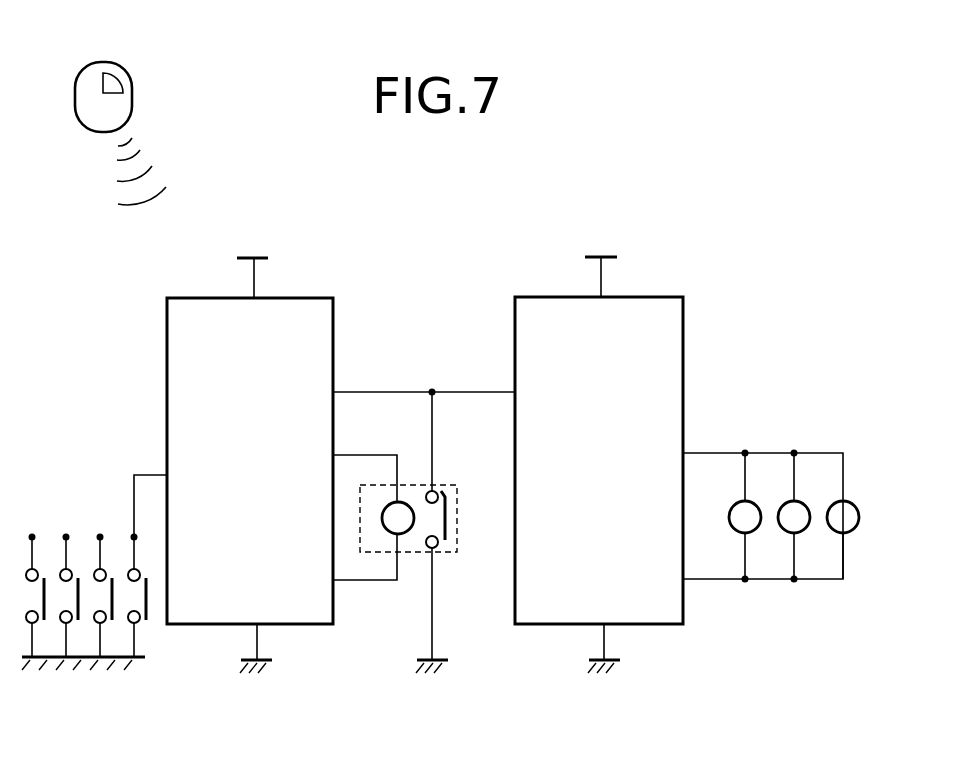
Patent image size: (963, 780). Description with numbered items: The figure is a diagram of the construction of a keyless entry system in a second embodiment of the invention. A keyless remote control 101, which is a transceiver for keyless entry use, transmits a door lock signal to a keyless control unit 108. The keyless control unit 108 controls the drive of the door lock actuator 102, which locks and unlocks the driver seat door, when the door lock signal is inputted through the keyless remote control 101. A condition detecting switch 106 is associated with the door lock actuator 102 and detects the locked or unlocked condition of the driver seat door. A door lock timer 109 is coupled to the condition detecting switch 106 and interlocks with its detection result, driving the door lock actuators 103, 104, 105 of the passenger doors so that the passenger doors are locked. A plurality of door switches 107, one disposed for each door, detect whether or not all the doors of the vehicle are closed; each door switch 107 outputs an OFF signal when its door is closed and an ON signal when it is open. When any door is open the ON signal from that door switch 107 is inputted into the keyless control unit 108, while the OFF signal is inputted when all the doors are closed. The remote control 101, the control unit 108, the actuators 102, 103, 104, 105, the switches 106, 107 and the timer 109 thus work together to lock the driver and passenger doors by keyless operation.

The keyless remote control 101 is at (115, 62).
The door lock actuator 102 is at (407, 500).
The door lock actuator 103 is at (740, 532).
The door lock actuator 104 is at (787, 500).
The door lock actuator 105 is at (838, 532).
The condition detecting switch 106 is at (455, 490).
The door switch 107 is at (50, 612).
The keyless control unit 108 is at (184, 298).
The door lock timer 109 is at (532, 297).